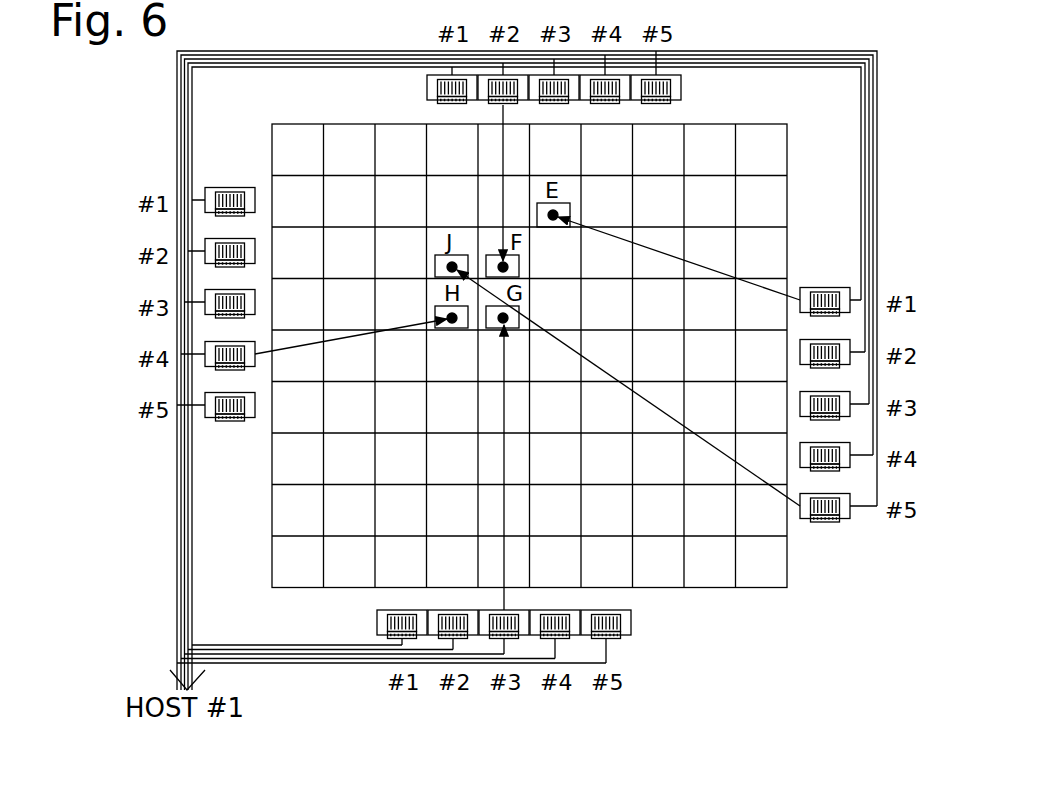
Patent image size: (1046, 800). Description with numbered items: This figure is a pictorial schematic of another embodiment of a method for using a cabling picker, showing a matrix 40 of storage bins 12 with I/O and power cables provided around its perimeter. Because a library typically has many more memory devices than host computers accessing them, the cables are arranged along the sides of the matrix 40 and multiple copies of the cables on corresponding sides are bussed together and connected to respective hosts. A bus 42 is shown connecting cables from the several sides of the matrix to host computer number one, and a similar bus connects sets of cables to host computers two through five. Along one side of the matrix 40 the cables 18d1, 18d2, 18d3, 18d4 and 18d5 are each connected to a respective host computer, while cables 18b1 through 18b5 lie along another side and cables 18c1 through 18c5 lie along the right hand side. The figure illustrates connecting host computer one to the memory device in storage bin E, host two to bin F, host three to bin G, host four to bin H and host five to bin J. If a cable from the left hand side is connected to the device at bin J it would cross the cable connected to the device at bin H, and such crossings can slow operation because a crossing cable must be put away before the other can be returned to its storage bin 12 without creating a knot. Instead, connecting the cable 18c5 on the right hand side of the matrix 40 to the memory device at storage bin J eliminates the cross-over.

The matrix 40 is at (760, 36).
The bus 42 is at (286, 50).
The storage bins 12 is at (776, 148).
The cable 18d1 is at (416, 86).
The cable 18d2 is at (163, 272).
The cable 18d3 is at (163, 323).
The cable 18d4 is at (163, 375).
The cable 18d5 is at (163, 427).
The cable 18c1 is at (818, 283).
The cable 18c5 is at (818, 527).
The cable 18b1 is at (375, 624).
The cable 18b5 is at (636, 622).